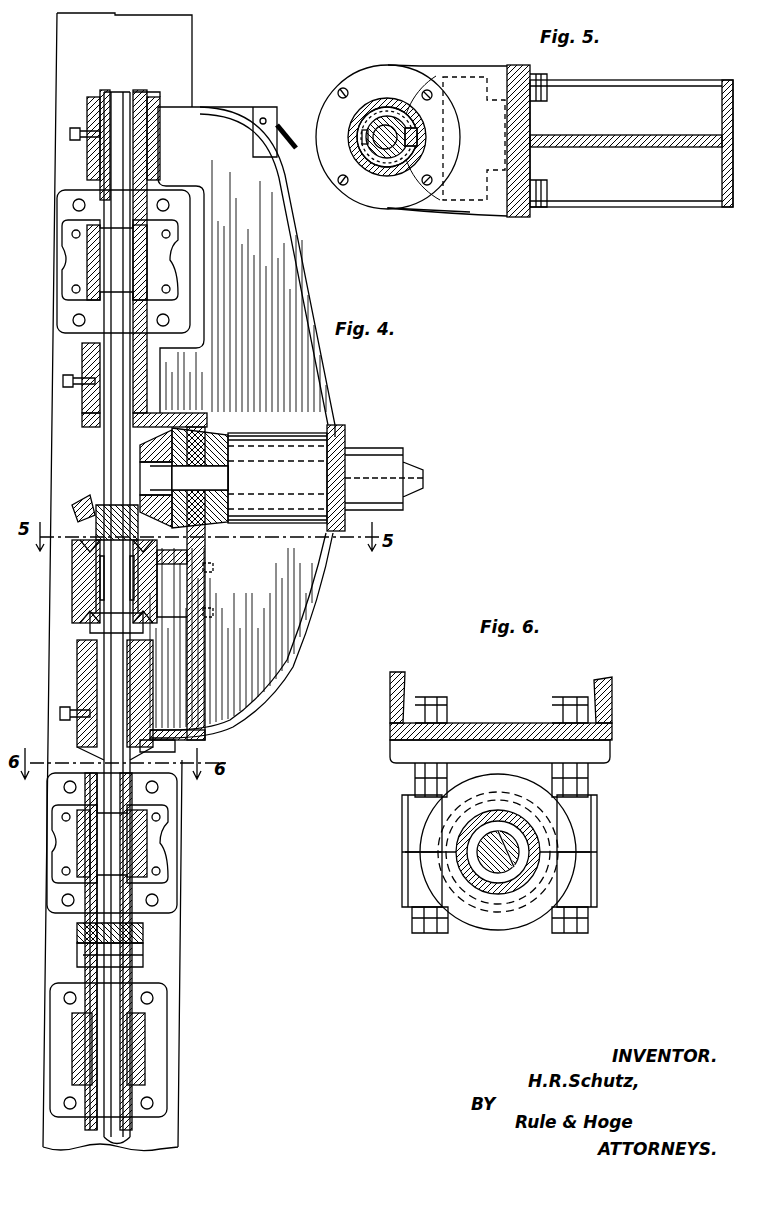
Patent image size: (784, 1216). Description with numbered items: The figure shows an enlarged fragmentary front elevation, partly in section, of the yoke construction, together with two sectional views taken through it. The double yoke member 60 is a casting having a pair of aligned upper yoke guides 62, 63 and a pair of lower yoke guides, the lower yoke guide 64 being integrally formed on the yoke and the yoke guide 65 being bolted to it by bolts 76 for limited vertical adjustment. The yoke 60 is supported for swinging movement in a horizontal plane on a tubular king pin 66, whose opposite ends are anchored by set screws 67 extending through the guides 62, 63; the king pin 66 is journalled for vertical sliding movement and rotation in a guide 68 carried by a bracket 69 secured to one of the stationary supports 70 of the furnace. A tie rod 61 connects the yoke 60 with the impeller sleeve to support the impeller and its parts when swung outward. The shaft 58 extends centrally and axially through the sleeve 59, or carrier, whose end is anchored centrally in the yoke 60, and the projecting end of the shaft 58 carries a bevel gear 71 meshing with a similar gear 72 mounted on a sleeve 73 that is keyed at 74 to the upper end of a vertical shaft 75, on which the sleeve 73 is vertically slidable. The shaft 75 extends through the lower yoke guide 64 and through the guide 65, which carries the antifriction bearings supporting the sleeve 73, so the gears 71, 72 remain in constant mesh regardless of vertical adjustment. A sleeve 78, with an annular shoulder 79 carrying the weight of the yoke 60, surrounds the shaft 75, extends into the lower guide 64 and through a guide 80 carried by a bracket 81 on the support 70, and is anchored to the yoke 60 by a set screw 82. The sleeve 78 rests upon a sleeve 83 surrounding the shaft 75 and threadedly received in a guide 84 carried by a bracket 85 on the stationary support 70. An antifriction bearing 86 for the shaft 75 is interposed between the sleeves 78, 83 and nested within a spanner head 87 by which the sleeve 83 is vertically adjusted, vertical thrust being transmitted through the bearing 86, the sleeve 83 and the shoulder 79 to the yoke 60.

In FIG. 4, the shaft 58 is at (417, 476).
In FIG. 4, the sleeve 59 is at (375, 452).
In FIG. 4, the double yoke member 60 is at (297, 284).
In FIG. 5, the double yoke member 60 is at (642, 84).
In FIG. 4, the tie rod 61 is at (291, 150).
In FIG. 4, the upper yoke guide 62 is at (149, 106).
In FIG. 4, the upper yoke guide 63 is at (96, 414).
In FIG. 4, the lower yoke guide 64 is at (80, 688).
In FIG. 4, the yoke guide 65 is at (72, 588).
In FIG. 5, the yoke guide 65 is at (468, 208).
In FIG. 4, the king pin 66 is at (110, 92).
In FIG. 4, the set screws 67 is at (75, 130).
In FIG. 4, the guide 68 is at (90, 257).
In FIG. 4, the bracket 69 is at (60, 283).
In FIG. 4, the stationary support 70 is at (37, 925).
In FIG. 6, the stationary support 70 is at (400, 680).
In FIG. 4, the bevel gear 71 is at (150, 453).
In FIG. 4, the gear 72 is at (90, 508).
In FIG. 5, the gear 72 is at (362, 106).
In FIG. 4, the sleeve 73 is at (115, 514).
In FIG. 5, the sleeve 73 is at (380, 106).
In FIG. 4, the key 74 is at (104, 577).
In FIG. 5, the key 74 is at (350, 136).
In FIG. 4, the shaft 75 is at (112, 498).
In FIG. 5, the shaft 75 is at (395, 100).
In FIG. 6, the shaft 75 is at (496, 872).
In FIG. 4, the bolts 76 is at (212, 612).
In FIG. 5, the bolts 76 is at (548, 93).
In FIG. 4, the sleeve 78 is at (128, 797).
In FIG. 6, the sleeve 78 is at (540, 838).
In FIG. 4, the annular shoulder 79 is at (176, 750).
In FIG. 4, the guide 80 is at (147, 850).
In FIG. 4, the bracket 81 is at (176, 870).
In FIG. 6, the bracket 81 is at (600, 758).
In FIG. 4, the set screw 82 is at (60, 712).
In FIG. 4, the sleeve 83 is at (132, 982).
In FIG. 4, the guide 84 is at (145, 1040).
In FIG. 4, the bracket 85 is at (165, 1060).
In FIG. 4, the antifriction bearing 86 is at (143, 933).
In FIG. 4, the spanner head 87 is at (145, 952).